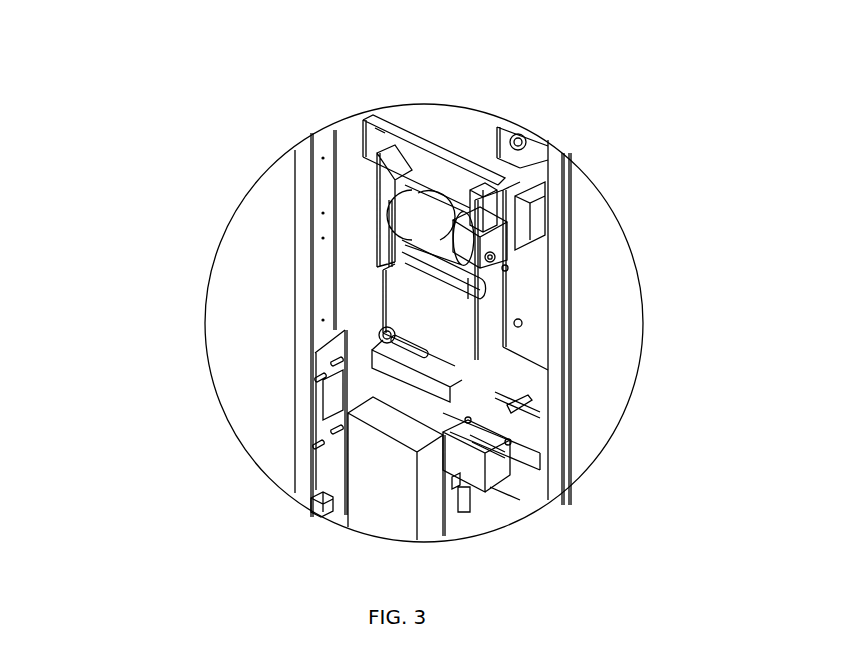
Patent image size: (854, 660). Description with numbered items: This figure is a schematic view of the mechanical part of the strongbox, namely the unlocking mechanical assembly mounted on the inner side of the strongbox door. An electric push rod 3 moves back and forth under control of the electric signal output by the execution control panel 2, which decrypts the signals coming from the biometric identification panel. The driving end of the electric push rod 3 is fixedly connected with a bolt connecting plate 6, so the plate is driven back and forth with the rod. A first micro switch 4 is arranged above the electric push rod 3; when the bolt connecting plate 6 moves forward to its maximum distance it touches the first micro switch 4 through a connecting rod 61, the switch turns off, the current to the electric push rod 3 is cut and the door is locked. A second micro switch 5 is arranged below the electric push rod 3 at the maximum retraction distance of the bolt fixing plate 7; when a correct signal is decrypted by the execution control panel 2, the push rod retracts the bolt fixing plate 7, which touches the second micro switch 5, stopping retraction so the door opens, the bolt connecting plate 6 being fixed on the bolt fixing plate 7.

The execution control panel 2 is at (62, 83).
The electric push rod 3 is at (704, 115).
The first micro switch 4 is at (723, 29).
The second micro switch 5 is at (621, 543).
The bolt connecting plate 6 is at (701, 396).
The connecting rod 61 is at (768, 189).
The bolt fixing plate 7 is at (705, 445).